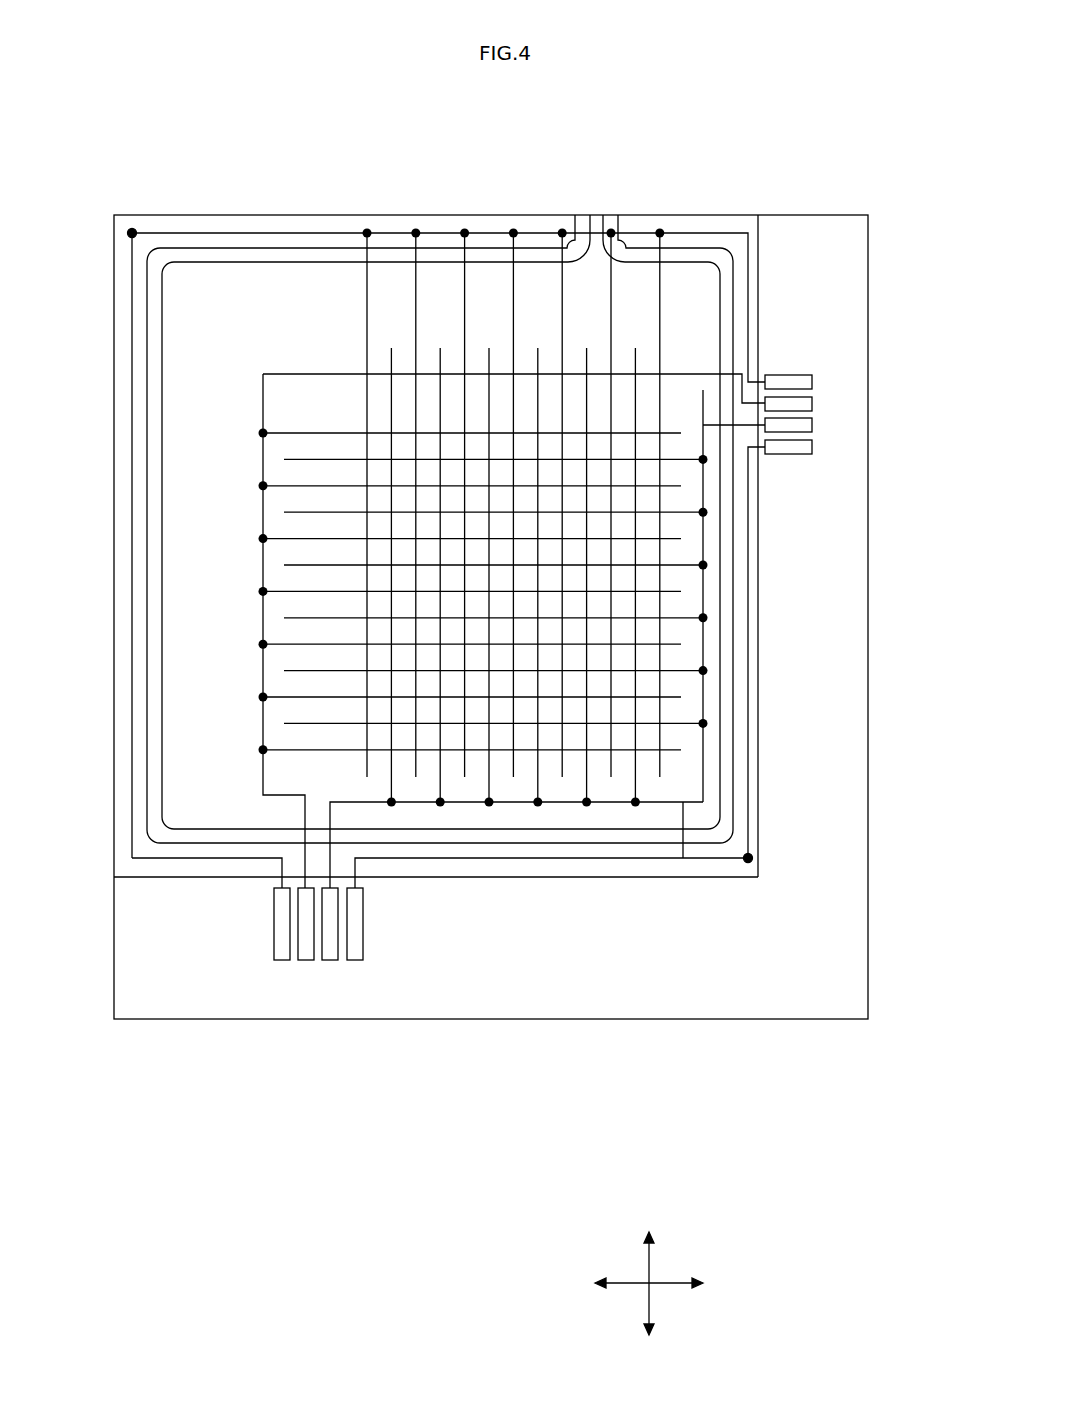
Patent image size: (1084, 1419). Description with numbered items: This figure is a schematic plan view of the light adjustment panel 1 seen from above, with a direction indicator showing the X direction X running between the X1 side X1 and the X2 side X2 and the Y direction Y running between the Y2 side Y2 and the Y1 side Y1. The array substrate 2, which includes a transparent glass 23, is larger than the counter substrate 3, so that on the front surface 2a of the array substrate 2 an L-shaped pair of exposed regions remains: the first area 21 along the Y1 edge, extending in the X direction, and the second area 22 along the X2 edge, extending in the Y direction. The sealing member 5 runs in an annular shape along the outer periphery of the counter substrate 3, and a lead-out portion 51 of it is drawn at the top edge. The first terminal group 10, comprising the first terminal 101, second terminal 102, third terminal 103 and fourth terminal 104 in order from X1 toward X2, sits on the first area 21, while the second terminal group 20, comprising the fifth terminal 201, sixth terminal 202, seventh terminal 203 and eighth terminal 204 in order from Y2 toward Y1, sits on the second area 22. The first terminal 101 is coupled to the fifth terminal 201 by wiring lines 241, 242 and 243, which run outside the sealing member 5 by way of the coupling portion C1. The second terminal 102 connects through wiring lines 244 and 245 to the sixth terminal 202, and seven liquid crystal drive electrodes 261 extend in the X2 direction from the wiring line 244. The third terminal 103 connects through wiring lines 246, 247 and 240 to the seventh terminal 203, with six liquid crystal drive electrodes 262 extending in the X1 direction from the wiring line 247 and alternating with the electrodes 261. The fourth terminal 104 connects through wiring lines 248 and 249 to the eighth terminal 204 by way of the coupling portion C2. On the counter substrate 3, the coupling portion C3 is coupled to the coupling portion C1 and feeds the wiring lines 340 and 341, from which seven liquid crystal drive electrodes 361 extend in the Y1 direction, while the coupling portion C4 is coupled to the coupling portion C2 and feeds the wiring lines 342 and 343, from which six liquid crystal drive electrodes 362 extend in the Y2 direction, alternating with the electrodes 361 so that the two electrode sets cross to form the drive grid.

The light adjustment panel 1 is at (648, 151).
The array substrate 2 is at (556, 1026).
The front surface of the array substrate 2a is at (807, 1001).
The counter substrate 3 is at (709, 886).
The sealing member 5 is at (241, 255).
The first terminal group 10 is at (305, 1018).
The second terminal group 20 is at (864, 489).
The first area 21 is at (135, 998).
The second area 22 is at (833, 245).
The transparent glass 23 is at (185, 228).
The shield wiring lead-out portion 51 is at (596, 226).
The first terminal 101 is at (282, 962).
The second terminal 102 is at (305, 962).
The third terminal 103 is at (330, 962).
The fourth terminal 104 is at (371, 997).
The fifth terminal 201 is at (812, 382).
The sixth terminal 202 is at (812, 404).
The seventh terminal 203 is at (812, 425).
The eighth terminal 204 is at (812, 447).
The wiring line 240 is at (712, 428).
The wiring line 241 is at (240, 860).
The wiring line 242 is at (87, 545).
The wiring line 243 is at (448, 253).
The wiring line 244 is at (262, 522).
The wiring line 245 is at (278, 374).
The wiring line 246 is at (516, 893).
The wiring line 247 is at (705, 688).
The wiring line 248 is at (402, 860).
The wiring line 249 is at (748, 832).
The liquid crystal drive electrodes 261 is at (345, 750).
The liquid crystal drive electrodes 262 is at (692, 722).
The wiring line 340 is at (132, 665).
The wiring line 341 is at (308, 233).
The wiring line 342 is at (682, 842).
The wiring line 343 is at (468, 804).
The liquid crystal drive electrodes 361 is at (658, 347).
The liquid crystal drive electrodes 362 is at (633, 757).
The coupling portion C1 is at (89, 255).
The coupling portion C2 is at (802, 873).
The coupling portion C3 is at (128, 233).
The coupling portion C4 is at (750, 863).
The X direction X is at (675, 1280).
The Y direction Y is at (652, 1293).
The X1 side X1 is at (577, 1283).
The X2 side X2 is at (721, 1283).
The Y1 side Y1 is at (649, 1357).
The Y2 side Y2 is at (650, 1217).